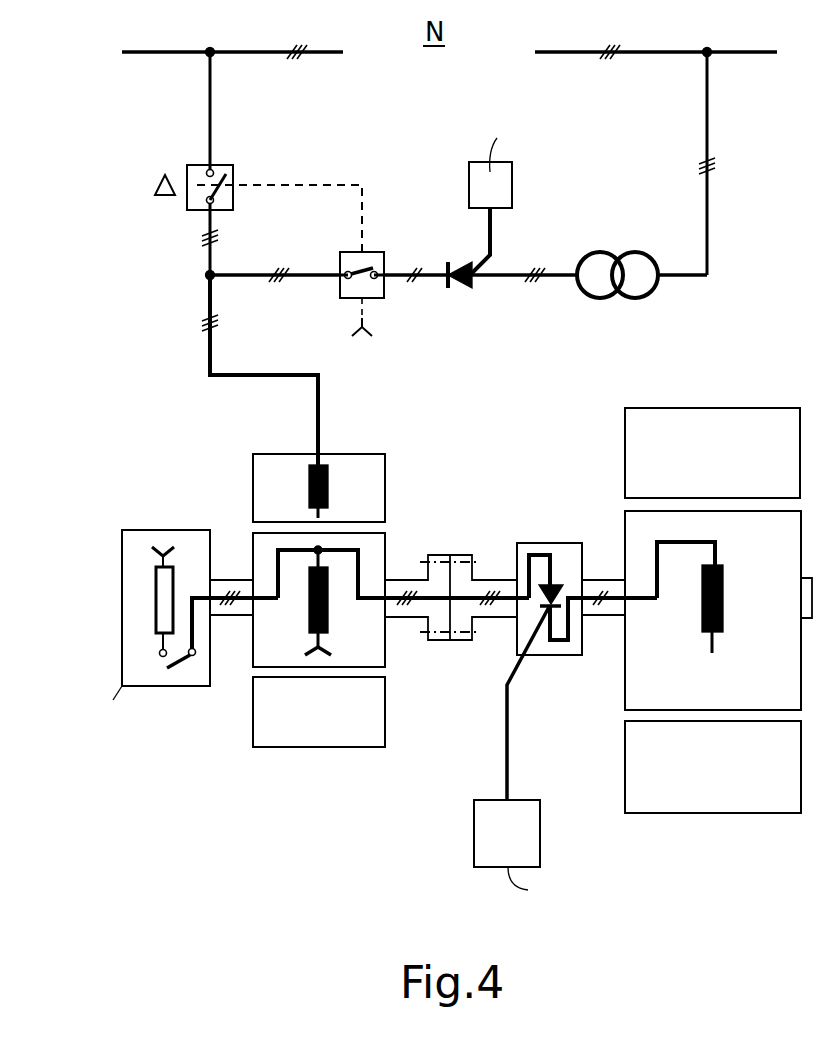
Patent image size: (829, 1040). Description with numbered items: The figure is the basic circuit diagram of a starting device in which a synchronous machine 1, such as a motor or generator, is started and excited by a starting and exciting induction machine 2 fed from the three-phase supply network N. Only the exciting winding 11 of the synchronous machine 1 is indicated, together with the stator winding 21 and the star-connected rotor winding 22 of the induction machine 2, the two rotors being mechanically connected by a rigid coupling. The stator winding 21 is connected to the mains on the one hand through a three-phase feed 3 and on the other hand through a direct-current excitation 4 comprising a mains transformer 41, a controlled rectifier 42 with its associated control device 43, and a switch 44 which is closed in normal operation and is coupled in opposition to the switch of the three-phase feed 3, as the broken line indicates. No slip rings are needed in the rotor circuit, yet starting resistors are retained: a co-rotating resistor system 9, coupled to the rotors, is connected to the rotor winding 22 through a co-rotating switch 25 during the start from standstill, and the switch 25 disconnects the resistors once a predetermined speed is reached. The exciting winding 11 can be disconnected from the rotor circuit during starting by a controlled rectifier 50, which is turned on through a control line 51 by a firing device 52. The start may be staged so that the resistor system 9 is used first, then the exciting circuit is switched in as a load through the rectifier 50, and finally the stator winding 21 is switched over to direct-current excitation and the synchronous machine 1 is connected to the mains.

The synchronous machine 1 is at (608, 401).
The starting and exciting induction machine 2 is at (237, 447).
The three-phase feed 3 is at (161, 127).
The direct-current excitation 4 is at (627, 214).
The co-rotating resistor system 9 is at (122, 608).
The exciting winding 11 is at (702, 618).
The stator winding 21 is at (328, 478).
The rotor winding 22 is at (328, 607).
The co-rotating switch 25 is at (175, 669).
The mains transformer 41 is at (608, 297).
The controlled rectifier 42 is at (457, 287).
The control device 43 is at (474, 192).
The switch 44 is at (350, 261).
The controlled rectifier 50 is at (543, 543).
The control line 51 is at (506, 746).
The firing device 52 is at (486, 843).